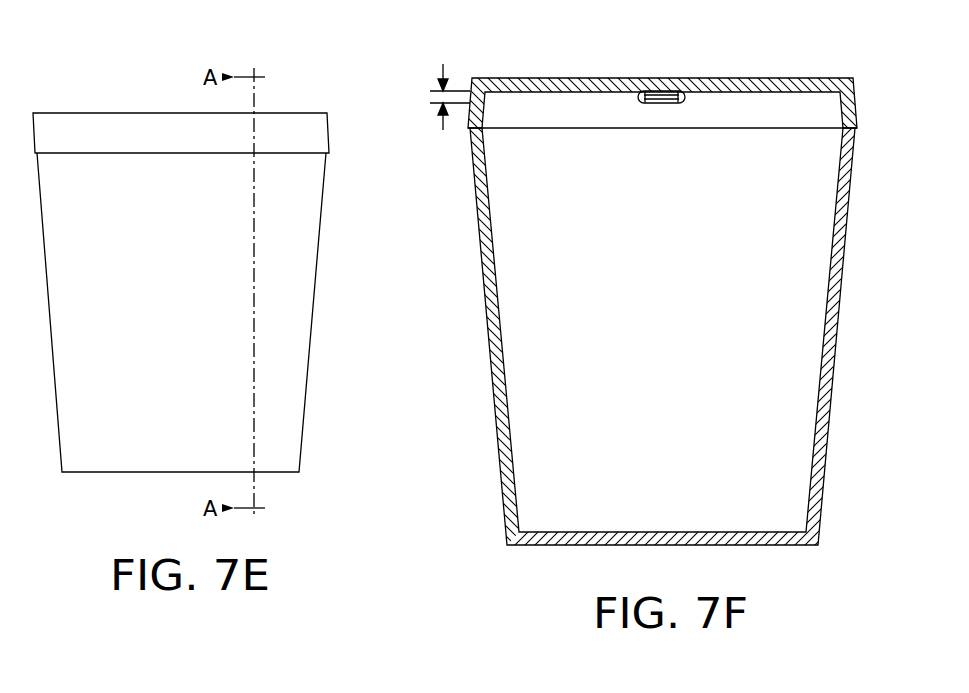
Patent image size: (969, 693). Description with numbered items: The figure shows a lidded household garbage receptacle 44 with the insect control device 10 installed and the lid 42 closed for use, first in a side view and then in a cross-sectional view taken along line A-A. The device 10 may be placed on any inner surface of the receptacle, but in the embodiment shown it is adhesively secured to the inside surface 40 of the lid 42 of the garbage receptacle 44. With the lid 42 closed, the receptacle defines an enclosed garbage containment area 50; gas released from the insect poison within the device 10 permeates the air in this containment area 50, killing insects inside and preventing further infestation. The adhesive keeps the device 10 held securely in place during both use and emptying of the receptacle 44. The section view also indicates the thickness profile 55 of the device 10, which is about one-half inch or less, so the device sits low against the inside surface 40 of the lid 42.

In FIG. 7F, the insect control device 10 is at (687, 97).
In FIG. 7F, the inside surface 40 is at (606, 92).
In FIG. 7E, the lid 42 is at (76, 128).
In FIG. 7F, the lid 42 is at (803, 78).
In FIG. 7E, the garbage receptacle 44 is at (135, 172).
In FIG. 7F, the garbage receptacle 44 is at (843, 209).
In FIG. 7F, the enclosed garbage containment area 50 is at (681, 277).
In FIG. 7F, the thickness profile 55 is at (431, 93).